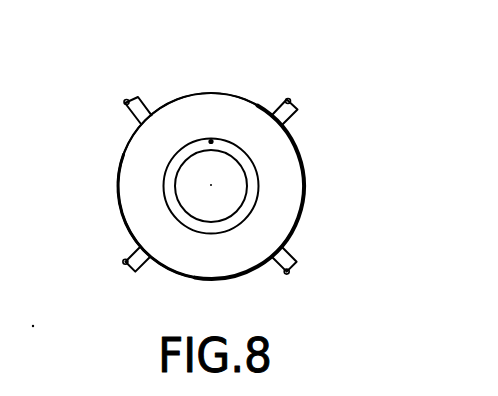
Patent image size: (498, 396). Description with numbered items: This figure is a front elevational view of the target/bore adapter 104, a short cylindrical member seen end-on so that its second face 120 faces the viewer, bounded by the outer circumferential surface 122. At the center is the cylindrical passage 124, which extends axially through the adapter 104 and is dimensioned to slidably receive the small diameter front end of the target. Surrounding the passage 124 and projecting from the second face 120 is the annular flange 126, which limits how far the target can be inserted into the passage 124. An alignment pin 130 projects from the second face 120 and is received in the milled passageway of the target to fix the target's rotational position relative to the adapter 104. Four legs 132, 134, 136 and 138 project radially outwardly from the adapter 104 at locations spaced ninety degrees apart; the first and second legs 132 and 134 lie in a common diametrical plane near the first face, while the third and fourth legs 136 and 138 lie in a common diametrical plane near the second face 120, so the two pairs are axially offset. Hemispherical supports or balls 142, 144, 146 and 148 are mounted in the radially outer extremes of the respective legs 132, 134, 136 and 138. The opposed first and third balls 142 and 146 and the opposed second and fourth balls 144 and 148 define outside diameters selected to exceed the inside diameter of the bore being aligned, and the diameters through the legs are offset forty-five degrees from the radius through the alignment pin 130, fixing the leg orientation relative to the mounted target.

The target/bore adapter 104 is at (180, 63).
The second face 120 is at (215, 273).
The outer circumferential surface 122 is at (192, 91).
The cylindrical passage 124 is at (212, 141).
The annular flange 126 is at (169, 166).
The alignment pin 130 is at (238, 166).
The first leg 132 is at (151, 80).
The second leg 134 is at (293, 118).
The third leg 136 is at (291, 252).
The fourth leg 138 is at (133, 252).
The first ball 142 is at (126, 100).
The second ball 144 is at (292, 101).
The third ball 146 is at (290, 271).
The fourth ball 148 is at (128, 267).